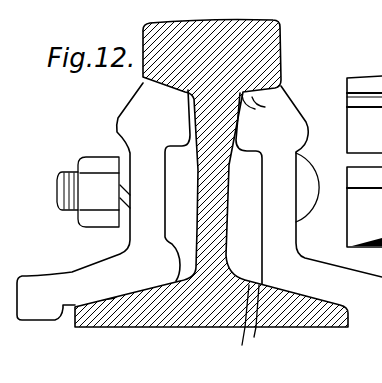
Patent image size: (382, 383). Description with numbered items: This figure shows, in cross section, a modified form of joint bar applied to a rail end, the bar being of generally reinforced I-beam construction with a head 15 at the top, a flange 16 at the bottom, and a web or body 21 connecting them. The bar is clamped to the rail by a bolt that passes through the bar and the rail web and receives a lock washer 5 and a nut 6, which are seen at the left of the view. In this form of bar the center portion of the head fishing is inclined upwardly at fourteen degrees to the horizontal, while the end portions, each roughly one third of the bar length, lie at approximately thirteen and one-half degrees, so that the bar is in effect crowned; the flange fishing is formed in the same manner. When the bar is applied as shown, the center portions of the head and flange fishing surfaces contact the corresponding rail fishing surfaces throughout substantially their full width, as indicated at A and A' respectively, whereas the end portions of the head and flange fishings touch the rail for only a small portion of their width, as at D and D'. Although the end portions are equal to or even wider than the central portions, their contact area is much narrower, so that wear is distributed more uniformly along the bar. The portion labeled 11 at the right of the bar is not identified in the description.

The lock washer 5 is at (127, 230).
The nut 6 is at (93, 157).
The curved bearing surface 11 is at (310, 172).
The head 15 is at (283, 105).
The flange 16 is at (326, 327).
The web or body 21 is at (283, 223).
The head fishing contact area A is at (292, 52).
The head fishing end contact area D is at (257, 113).
The flange fishing contact area A' is at (281, 272).
The flange fishing end contact area D' is at (250, 323).